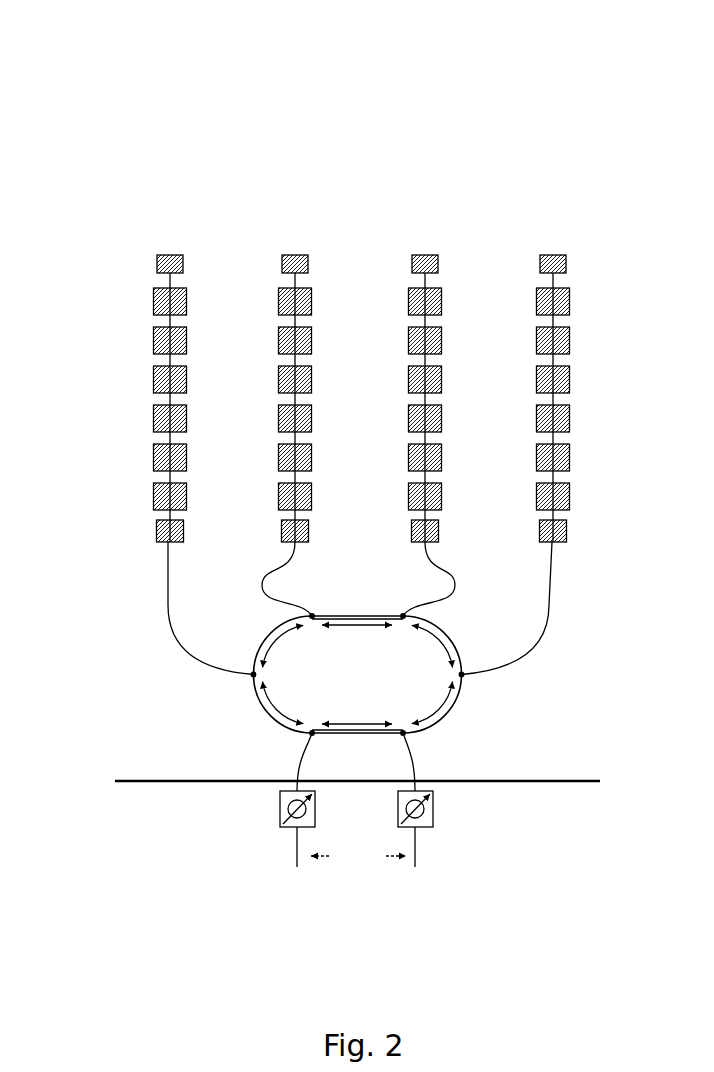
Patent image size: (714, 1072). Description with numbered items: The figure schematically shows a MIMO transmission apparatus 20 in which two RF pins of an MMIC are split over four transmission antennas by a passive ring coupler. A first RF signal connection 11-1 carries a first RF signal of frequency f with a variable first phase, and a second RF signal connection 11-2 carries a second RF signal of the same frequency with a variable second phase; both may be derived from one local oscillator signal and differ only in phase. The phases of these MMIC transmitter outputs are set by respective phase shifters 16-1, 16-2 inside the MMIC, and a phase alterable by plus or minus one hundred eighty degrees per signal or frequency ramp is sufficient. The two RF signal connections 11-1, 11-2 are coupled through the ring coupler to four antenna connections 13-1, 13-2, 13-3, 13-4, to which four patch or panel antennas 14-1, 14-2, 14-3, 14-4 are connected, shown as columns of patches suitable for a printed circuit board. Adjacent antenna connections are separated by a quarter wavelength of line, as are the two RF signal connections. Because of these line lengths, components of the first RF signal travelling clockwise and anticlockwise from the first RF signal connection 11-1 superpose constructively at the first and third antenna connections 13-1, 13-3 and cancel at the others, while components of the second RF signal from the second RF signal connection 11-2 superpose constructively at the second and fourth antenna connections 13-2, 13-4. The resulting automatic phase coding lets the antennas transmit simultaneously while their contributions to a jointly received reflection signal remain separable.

The transmission apparatus 20 is at (595, 72).
The first antenna 14-1 is at (145, 320).
The second antenna 14-2 is at (278, 266).
The third antenna 14-3 is at (405, 271).
The fourth antenna 14-4 is at (533, 277).
The first antenna connection 13-1 is at (254, 674).
The second antenna connection 13-2 is at (312, 616).
The third antenna connection 13-3 is at (403, 616).
The fourth antenna connection 13-4 is at (462, 674).
The first RF signal connection 11-1 is at (310, 733).
The second RF signal connection 11-2 is at (405, 733).
The first phase shifter 16-1 is at (282, 826).
The second phase shifter 16-2 is at (433, 817).